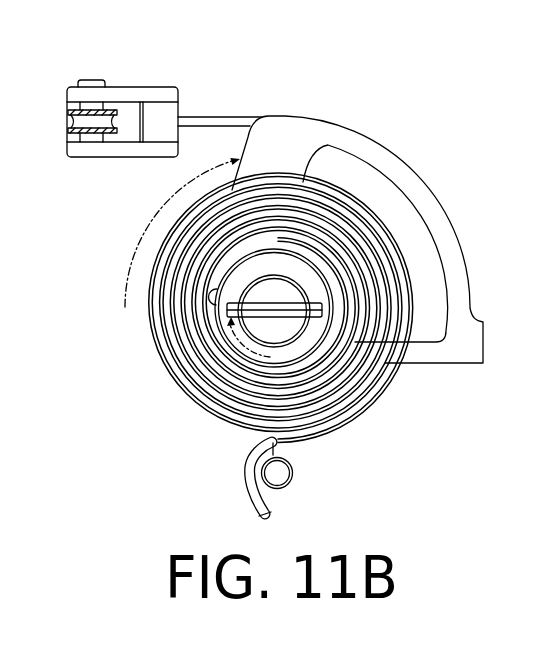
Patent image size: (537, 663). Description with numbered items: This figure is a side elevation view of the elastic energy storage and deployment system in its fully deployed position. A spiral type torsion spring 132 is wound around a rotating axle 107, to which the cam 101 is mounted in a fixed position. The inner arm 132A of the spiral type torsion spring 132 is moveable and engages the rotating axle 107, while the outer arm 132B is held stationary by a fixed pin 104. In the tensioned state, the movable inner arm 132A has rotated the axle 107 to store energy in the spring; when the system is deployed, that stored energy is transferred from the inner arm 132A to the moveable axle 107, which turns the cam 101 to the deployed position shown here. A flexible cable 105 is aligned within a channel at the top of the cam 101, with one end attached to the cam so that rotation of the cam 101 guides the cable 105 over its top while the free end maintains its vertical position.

The cam 101 is at (383, 143).
The fixed pin 104 is at (277, 473).
The flexible cable 105 is at (222, 113).
The rotating axle 107 is at (282, 327).
The spiral type torsion spring 132 is at (333, 442).
The inner arm 132A is at (267, 303).
The outer arm 132B is at (253, 507).